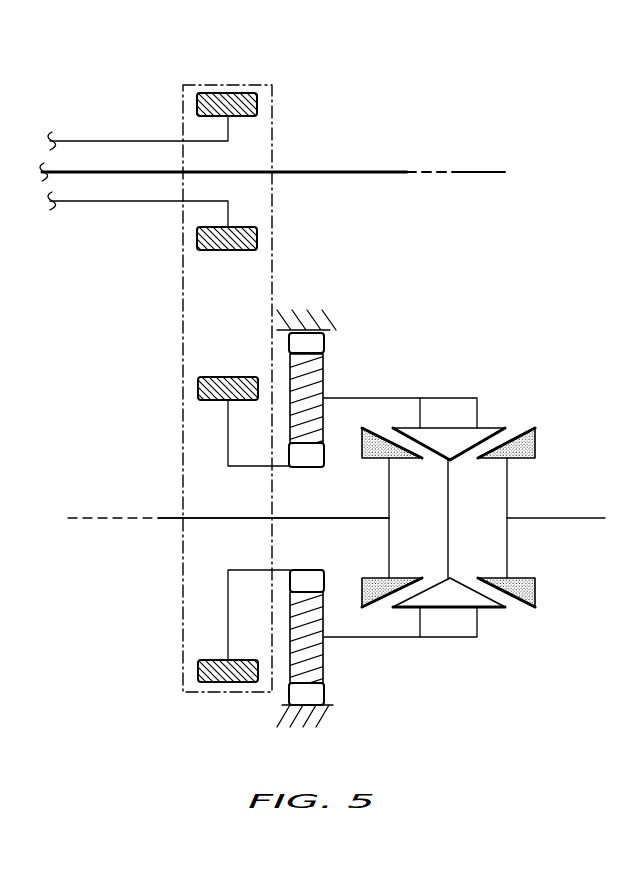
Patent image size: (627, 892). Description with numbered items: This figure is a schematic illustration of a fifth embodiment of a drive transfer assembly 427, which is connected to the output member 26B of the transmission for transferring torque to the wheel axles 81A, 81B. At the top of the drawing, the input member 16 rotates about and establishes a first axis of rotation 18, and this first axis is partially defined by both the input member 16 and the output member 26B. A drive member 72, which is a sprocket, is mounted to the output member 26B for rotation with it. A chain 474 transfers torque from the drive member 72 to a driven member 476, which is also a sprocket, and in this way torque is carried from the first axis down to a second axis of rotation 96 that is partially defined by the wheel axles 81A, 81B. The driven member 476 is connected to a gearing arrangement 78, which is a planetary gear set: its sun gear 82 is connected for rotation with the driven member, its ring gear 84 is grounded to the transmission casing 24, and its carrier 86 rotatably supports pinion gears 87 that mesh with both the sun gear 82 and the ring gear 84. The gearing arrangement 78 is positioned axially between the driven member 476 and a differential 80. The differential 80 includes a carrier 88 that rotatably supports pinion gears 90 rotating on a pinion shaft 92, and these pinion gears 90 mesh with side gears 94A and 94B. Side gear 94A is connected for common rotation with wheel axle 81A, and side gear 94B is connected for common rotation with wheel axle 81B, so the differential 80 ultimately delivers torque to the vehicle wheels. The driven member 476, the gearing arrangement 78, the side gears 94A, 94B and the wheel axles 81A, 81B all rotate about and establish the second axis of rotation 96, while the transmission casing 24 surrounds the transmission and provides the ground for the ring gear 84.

The input member 16 is at (337, 172).
The axis of rotation 18 is at (460, 172).
The transmission casing 24 is at (322, 312).
The output member 26B is at (120, 141).
The drive member 72 is at (240, 93).
The gearing arrangement 78 is at (346, 663).
The differential 80 is at (461, 513).
The wheel axle 81A is at (343, 518).
The wheel axle 81B is at (537, 518).
The sun gear 82 is at (324, 455).
The ring gear 84 is at (325, 343).
The carrier 86 is at (383, 398).
The pinion gears 87 is at (325, 425).
The carrier 88 is at (452, 398).
The pinion gears 90 is at (488, 608).
The pinion shaft 92 is at (450, 492).
The side gear 94A is at (356, 594).
The side gear 94B is at (538, 590).
The second axis of rotation 96 is at (118, 518).
The drive transfer assembly 427 is at (503, 209).
The chain 474 is at (183, 272).
The driven member 476 is at (212, 377).